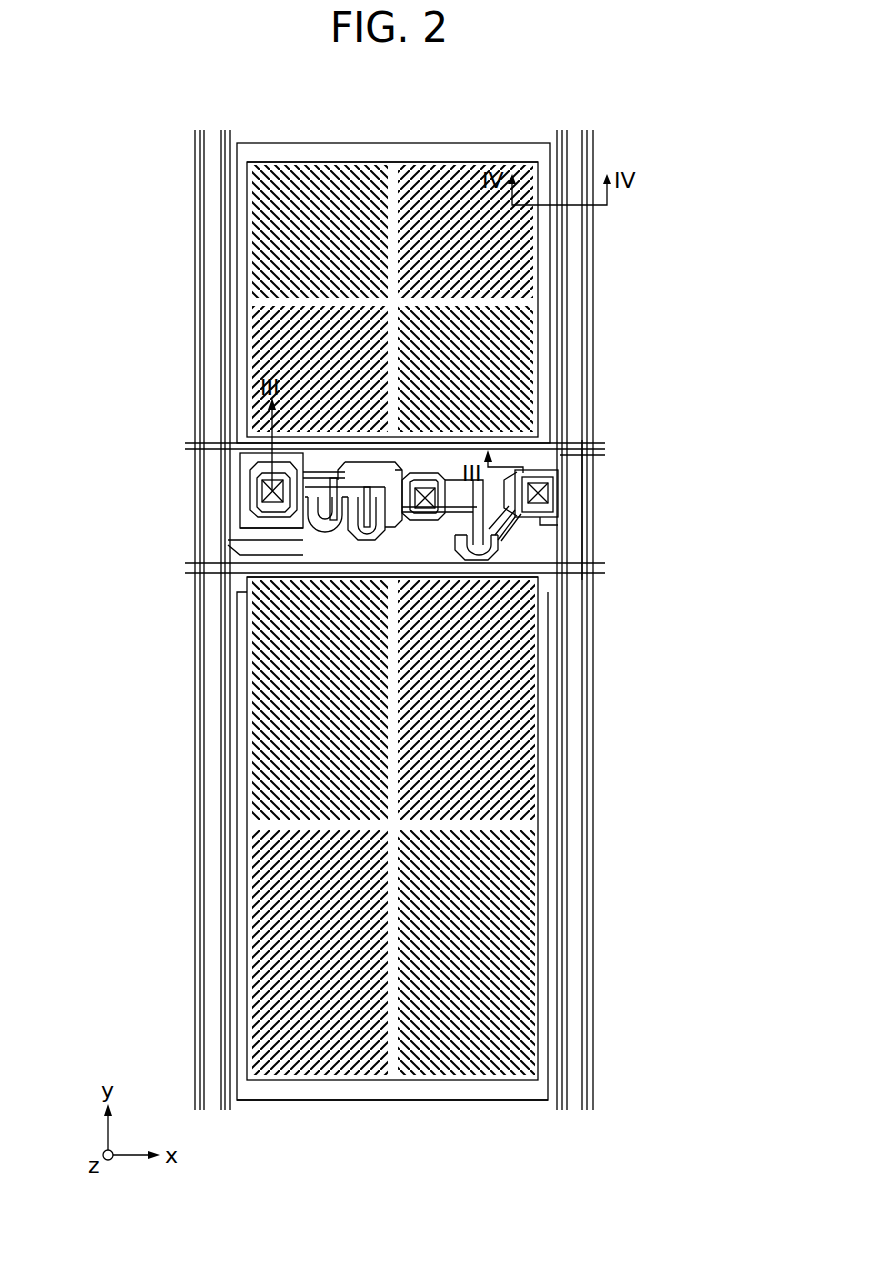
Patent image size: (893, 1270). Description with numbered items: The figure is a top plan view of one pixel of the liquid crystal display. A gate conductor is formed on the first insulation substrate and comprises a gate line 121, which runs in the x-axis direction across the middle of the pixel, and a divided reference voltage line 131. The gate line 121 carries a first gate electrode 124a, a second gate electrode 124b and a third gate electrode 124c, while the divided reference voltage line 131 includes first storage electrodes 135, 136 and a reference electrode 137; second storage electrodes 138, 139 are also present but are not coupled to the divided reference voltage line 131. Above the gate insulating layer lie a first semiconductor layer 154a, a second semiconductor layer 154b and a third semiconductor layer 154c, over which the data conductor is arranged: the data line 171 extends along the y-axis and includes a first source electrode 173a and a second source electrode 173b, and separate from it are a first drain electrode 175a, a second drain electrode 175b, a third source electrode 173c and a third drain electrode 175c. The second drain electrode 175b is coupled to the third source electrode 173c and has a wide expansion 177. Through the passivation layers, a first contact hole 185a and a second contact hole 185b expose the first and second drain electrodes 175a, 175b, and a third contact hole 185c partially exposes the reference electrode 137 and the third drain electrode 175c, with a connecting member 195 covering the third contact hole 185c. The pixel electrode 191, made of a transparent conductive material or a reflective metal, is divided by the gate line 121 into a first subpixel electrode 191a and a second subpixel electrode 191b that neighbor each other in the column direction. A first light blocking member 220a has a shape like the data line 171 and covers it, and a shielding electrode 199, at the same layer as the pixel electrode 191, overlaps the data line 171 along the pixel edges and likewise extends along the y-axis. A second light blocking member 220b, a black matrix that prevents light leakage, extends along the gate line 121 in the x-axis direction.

The gate line 121 is at (195, 553).
The first gate electrode 124a is at (290, 465).
The second gate electrode 124b is at (360, 478).
The third gate electrode 124c is at (560, 545).
The divided reference voltage line 131 is at (580, 455).
The first storage electrode 135 is at (555, 318).
The first storage electrode 136 is at (347, 143).
The reference electrode 137 is at (558, 472).
The second storage electrode 138 is at (548, 858).
The second storage electrode 139 is at (495, 1100).
The first semiconductor layer 154a is at (312, 485).
The second semiconductor layer 154b is at (340, 480).
The third semiconductor layer 154c is at (440, 535).
The data line 171 is at (203, 174).
The first source electrode 173a is at (240, 517).
The second source electrode 173b is at (365, 540).
The third source electrode 173c is at (557, 515).
The first drain electrode 175a is at (240, 462).
The second drain electrode 175b is at (350, 512).
The third drain electrode 175c is at (500, 537).
The wide expansion 177 is at (470, 470).
The first contact hole 185a is at (262, 490).
The second contact hole 185b is at (427, 488).
The third contact hole 185c is at (548, 490).
The pixel electrode 191 is at (678, 978).
The first subpixel electrode 191a is at (247, 275).
The second subpixel electrode 191b is at (247, 741).
The connecting member 195 is at (558, 503).
The shielding electrode 199 is at (230, 857).
The first light blocking member 220a is at (583, 246).
The second light blocking member 220b is at (588, 447).